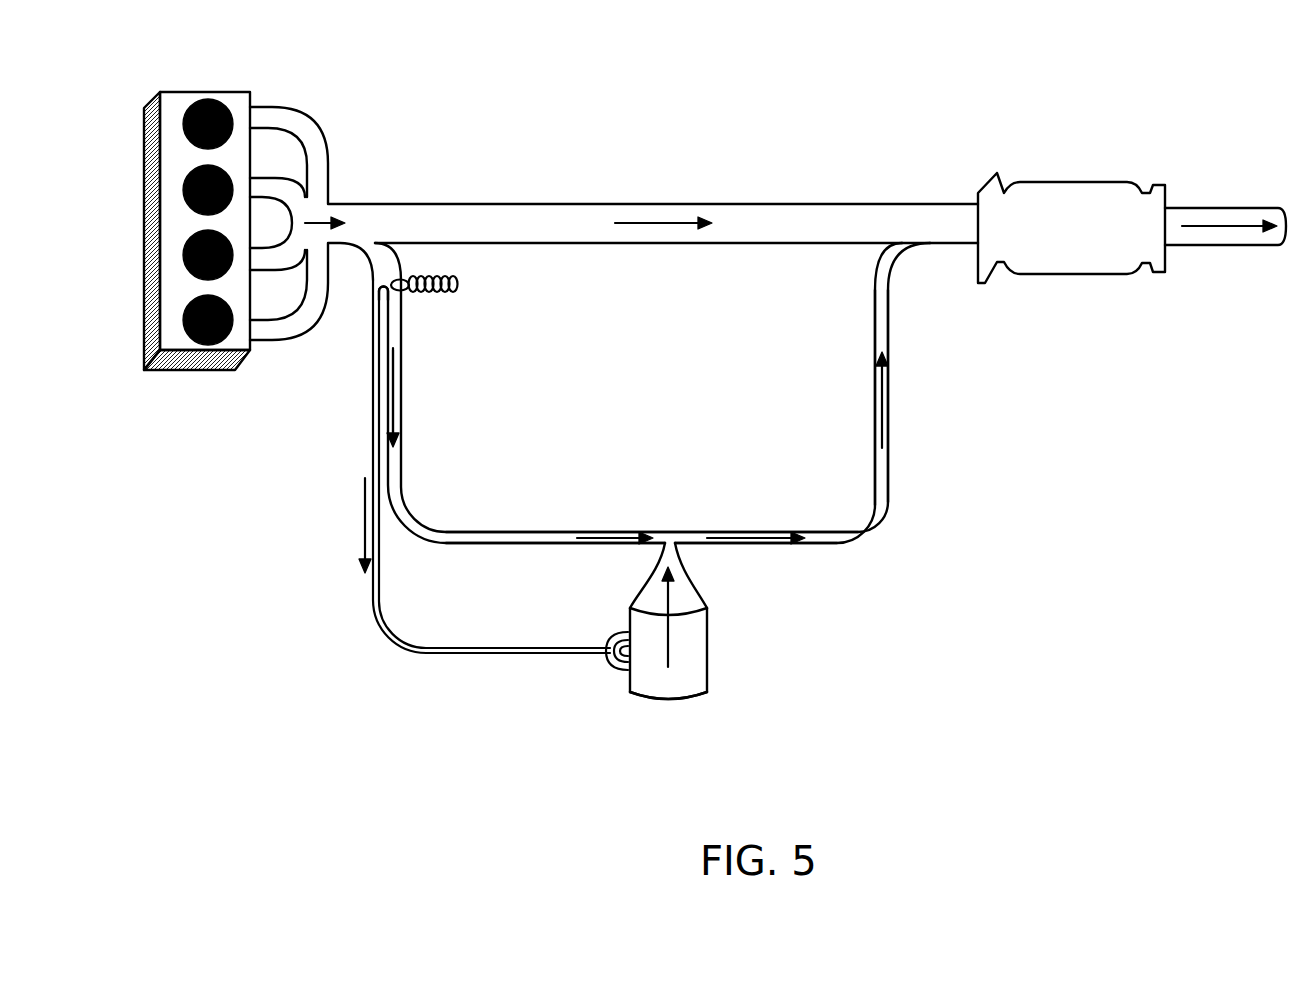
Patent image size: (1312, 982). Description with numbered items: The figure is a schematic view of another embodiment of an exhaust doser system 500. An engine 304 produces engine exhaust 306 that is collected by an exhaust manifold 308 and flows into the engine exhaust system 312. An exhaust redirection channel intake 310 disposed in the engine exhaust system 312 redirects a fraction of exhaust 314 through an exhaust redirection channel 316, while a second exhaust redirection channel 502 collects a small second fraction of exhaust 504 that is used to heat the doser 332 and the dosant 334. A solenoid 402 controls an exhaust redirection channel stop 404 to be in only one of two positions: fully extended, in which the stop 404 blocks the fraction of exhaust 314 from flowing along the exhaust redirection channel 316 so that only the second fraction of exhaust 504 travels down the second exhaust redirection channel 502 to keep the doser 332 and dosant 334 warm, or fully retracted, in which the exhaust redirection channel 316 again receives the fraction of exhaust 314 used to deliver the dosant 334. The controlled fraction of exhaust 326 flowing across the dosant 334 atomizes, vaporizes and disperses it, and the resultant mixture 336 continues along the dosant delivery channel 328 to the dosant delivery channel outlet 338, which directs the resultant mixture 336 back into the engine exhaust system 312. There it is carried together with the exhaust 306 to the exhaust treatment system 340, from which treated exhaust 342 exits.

The exhaust doser system 500 is at (469, 78).
The engine 304 is at (196, 372).
The engine exhaust 306 is at (325, 200).
The exhaust manifold 308 is at (293, 330).
The exhaust redirection channel intake 310 is at (365, 245).
The engine exhaust system 312 is at (514, 204).
The fraction of exhaust 314 is at (402, 393).
The exhaust redirection channel 316 is at (402, 350).
The controlled fraction of exhaust 326 is at (602, 545).
The dosant delivery channel 328 is at (703, 545).
The doser 332 is at (705, 690).
The dosant 334 is at (650, 697).
The resultant mixture 336 is at (880, 410).
The dosant delivery channel outlet 338 is at (912, 242).
The exhaust treatment system 340 is at (1085, 276).
The treated exhaust 342 is at (1228, 233).
The solenoid 402 is at (460, 281).
The exhaust redirection channel stop 404 is at (375, 300).
The second exhaust redirection channel 502 is at (370, 462).
The second fraction of exhaust 504 is at (362, 530).